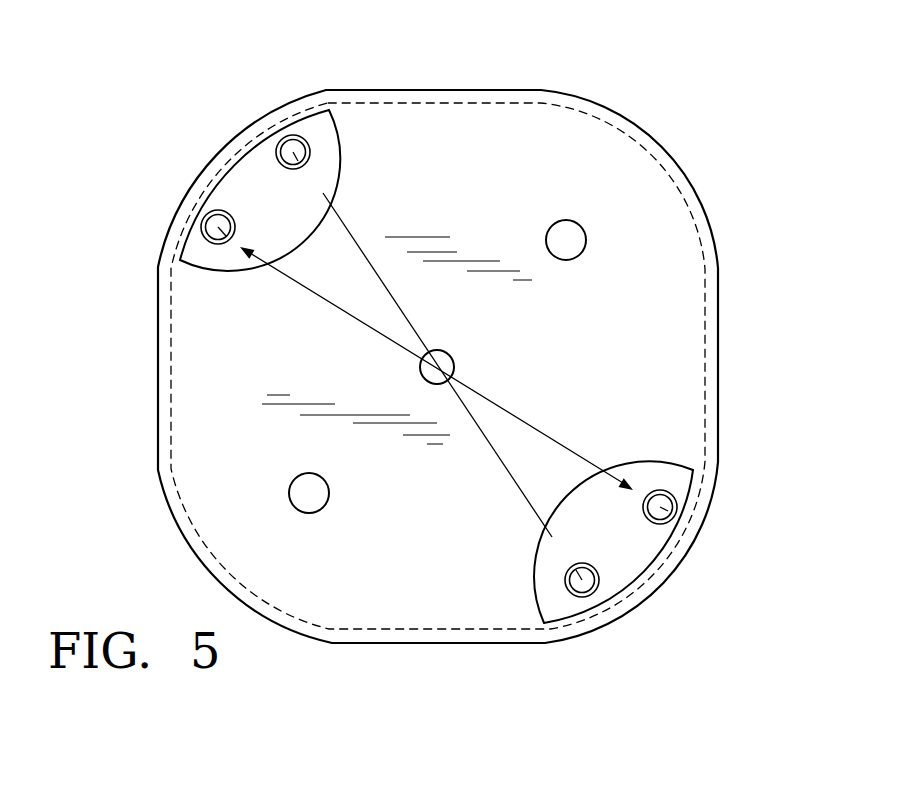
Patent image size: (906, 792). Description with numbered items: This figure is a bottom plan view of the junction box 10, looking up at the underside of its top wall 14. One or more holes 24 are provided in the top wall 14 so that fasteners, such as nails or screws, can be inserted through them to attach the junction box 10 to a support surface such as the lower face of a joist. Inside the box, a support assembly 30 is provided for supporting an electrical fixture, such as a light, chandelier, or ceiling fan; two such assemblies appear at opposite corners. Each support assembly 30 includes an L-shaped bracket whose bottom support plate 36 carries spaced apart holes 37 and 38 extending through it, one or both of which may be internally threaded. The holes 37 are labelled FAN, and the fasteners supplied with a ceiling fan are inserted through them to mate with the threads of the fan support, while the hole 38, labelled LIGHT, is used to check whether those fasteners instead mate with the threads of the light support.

The junction box 10 is at (645, 129).
The top wall 14 is at (570, 320).
The hole 24 is at (547, 240).
The support assembly 30 is at (174, 277).
The bottom support plate 36 is at (235, 250).
The hole 37 is at (218, 227).
The hole 38 is at (280, 150).